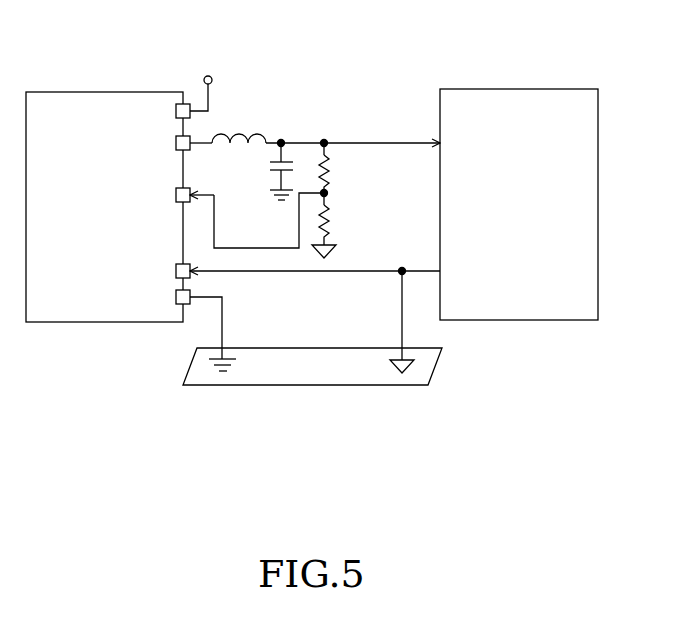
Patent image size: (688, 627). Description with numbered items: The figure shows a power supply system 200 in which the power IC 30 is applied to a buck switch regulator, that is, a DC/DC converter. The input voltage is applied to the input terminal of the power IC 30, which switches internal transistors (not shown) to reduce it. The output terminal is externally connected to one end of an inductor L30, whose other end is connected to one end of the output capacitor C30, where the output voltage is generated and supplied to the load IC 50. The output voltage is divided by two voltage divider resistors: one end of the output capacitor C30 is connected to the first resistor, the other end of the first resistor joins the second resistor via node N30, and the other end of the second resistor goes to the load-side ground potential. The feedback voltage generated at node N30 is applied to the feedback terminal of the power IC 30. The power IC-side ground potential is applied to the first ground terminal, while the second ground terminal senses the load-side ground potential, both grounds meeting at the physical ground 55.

The power supply system 200 is at (441, 27).
The power IC 30 is at (42, 92).
The load IC 50 is at (586, 89).
The physical ground 55 is at (415, 385).
The inductor L30 is at (239, 126).
The output capacitor C30 is at (257, 171).
The node N30 is at (327, 193).